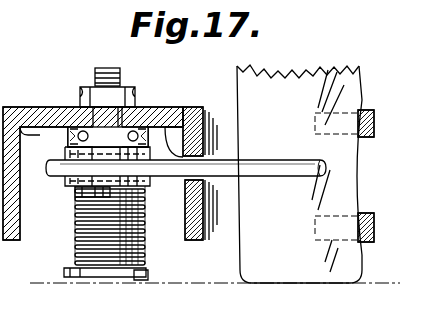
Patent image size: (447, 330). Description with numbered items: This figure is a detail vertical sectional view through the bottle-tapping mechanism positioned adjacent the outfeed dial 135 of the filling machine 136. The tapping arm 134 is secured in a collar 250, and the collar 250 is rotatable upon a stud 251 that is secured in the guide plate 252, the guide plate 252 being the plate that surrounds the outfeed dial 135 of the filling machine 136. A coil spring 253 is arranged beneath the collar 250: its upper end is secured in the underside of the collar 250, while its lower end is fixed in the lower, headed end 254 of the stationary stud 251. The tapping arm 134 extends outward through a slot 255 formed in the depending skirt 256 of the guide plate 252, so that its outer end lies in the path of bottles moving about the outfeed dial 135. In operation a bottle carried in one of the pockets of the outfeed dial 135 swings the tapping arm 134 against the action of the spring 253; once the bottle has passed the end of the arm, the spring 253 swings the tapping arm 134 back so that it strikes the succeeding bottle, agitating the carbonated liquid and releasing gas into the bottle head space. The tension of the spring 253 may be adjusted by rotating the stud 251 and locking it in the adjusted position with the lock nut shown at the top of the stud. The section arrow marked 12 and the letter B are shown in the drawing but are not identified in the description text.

The section line direction arrow 12 is at (7, 57).
The guide plate 252 is at (50, 107).
The stud 251 is at (112, 136).
The slot 255 is at (170, 127).
The depending skirt 256 is at (212, 240).
The tapping arm 134 is at (286, 170).
The collar 250 is at (68, 180).
The coil spring 253 is at (142, 212).
The headed end 254 is at (146, 276).
The filling machine 136 is at (182, 283).
The bar B is at (262, 268).
The outfeed dial 135 is at (372, 108).